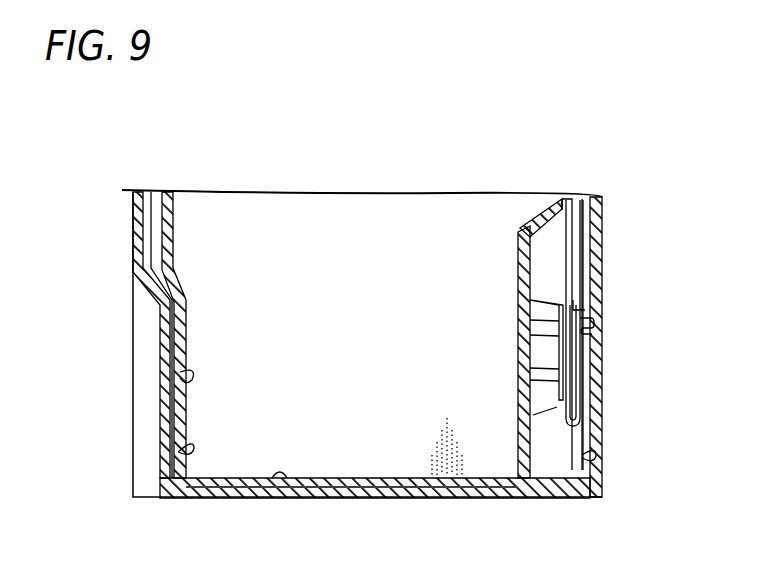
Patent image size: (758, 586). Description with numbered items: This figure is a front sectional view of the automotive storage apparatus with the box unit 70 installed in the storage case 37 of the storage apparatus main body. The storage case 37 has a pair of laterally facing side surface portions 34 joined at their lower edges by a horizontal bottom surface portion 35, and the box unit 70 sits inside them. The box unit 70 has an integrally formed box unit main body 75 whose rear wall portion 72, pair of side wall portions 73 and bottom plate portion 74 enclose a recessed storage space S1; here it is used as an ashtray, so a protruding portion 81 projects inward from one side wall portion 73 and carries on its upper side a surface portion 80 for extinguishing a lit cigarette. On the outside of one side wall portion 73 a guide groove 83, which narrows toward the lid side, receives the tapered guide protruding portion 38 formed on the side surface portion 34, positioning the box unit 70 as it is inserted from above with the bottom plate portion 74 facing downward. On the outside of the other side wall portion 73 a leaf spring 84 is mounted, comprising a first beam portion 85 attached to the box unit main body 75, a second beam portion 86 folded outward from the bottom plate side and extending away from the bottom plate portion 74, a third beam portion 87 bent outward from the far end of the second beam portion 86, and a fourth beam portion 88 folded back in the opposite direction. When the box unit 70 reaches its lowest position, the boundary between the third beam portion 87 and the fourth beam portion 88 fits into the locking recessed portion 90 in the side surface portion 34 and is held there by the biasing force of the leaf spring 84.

The storage case 37 is at (130, 237).
The guide protruding portion 38 is at (186, 345).
The guide groove 83 is at (170, 408).
The side wall portions 73 is at (180, 372).
The side surface portions 34 is at (178, 452).
The bottom plate portion 74 is at (368, 476).
The bottom surface portion 35 is at (281, 480).
The box unit 70 is at (591, 240).
The protruding portion 81 is at (520, 250).
The surface portion 80 is at (538, 218).
The second beam portion 86 is at (580, 380).
The fourth beam portion 88 is at (580, 308).
The locking recessed portion 90 is at (595, 334).
The third beam portion 87 is at (588, 340).
The leaf spring 84 is at (590, 409).
The first beam portion 85 is at (562, 405).
The recessed storage space S1 is at (320, 232).
The box unit main body 75 is at (391, 208).
The rear wall portion 72 is at (455, 232).